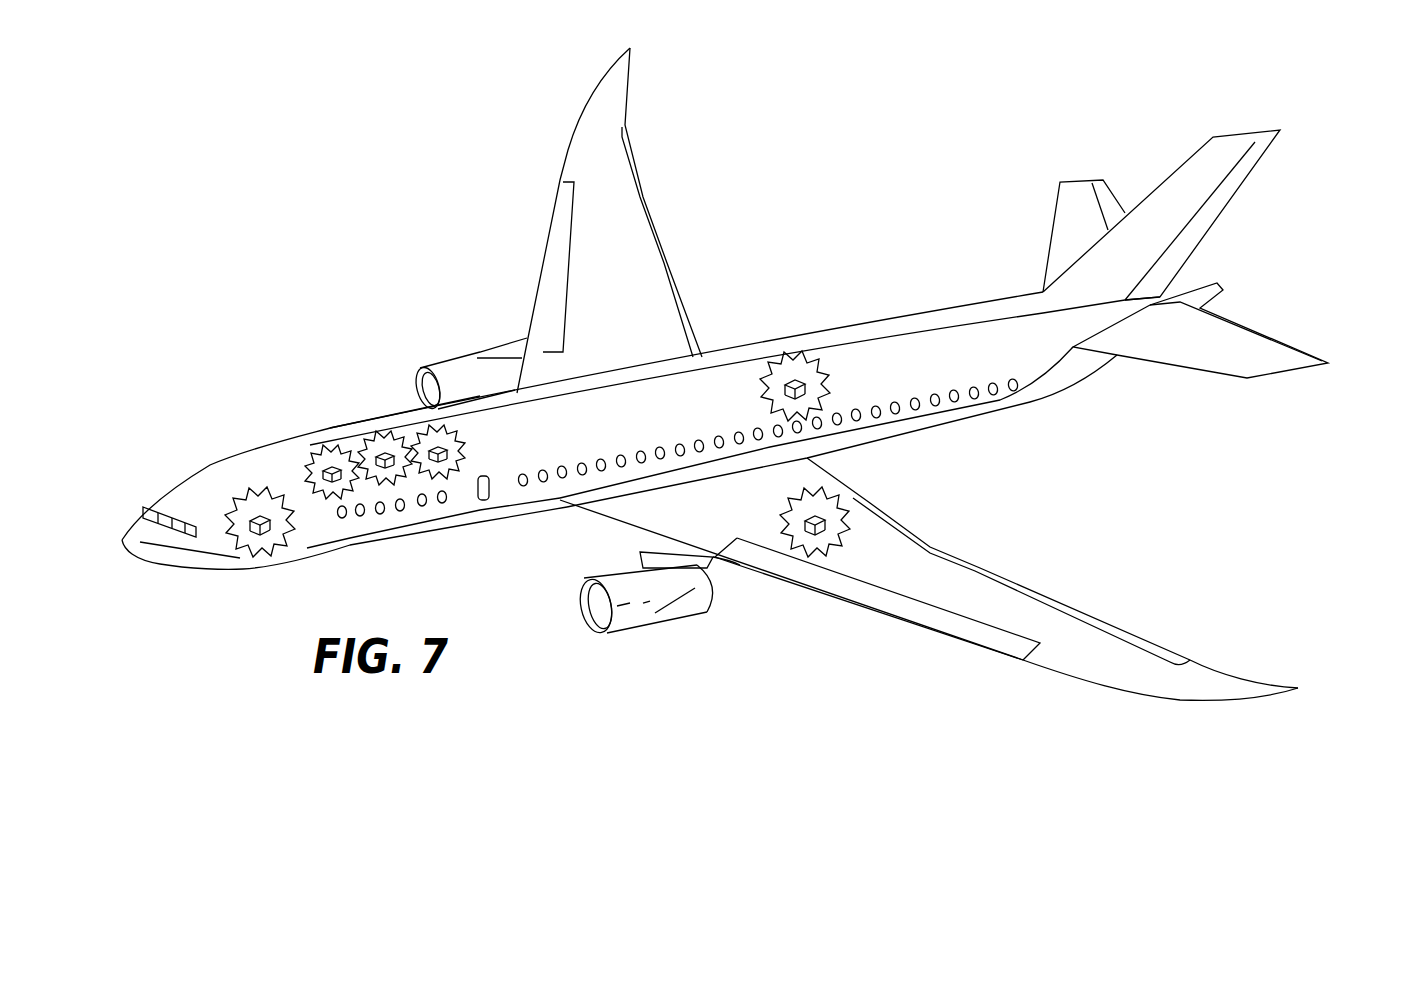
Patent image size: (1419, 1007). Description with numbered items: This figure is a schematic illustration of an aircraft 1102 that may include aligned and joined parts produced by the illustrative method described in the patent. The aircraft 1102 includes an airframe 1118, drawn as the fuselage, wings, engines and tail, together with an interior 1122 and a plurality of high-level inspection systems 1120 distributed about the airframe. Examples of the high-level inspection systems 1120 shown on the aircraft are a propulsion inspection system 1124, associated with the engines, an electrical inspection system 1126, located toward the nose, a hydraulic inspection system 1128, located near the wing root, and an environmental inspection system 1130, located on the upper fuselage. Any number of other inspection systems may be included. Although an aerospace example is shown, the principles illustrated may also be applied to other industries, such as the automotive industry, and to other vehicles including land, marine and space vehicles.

The aircraft 1102 is at (399, 227).
The airframe 1118 is at (382, 405).
The high-level inspection systems 1120 is at (1210, 532).
The interior 1122 is at (385, 485).
The propulsion inspection system 1124 is at (452, 360).
The electrical inspection system 1126 is at (253, 496).
The hydraulic inspection system 1128 is at (828, 500).
The environmental inspection system 1130 is at (789, 352).